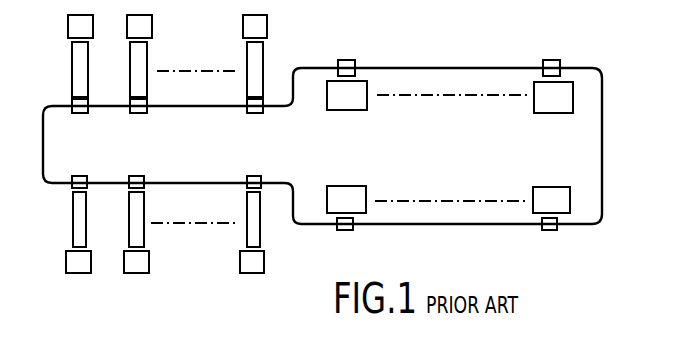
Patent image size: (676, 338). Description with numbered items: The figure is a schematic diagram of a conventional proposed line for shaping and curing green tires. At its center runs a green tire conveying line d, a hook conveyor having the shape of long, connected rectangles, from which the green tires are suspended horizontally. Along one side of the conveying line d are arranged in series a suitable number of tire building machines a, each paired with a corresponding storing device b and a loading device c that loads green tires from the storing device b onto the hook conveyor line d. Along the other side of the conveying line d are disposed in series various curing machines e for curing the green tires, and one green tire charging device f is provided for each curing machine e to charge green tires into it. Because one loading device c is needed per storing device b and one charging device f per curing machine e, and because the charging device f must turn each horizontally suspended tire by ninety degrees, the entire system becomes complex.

The tire building machine a is at (66, 258).
The storing device b is at (72, 211).
The loading device c is at (80, 175).
The green tire conveying line d is at (207, 183).
The curing machine e is at (351, 186).
The green tire charging device f is at (340, 231).